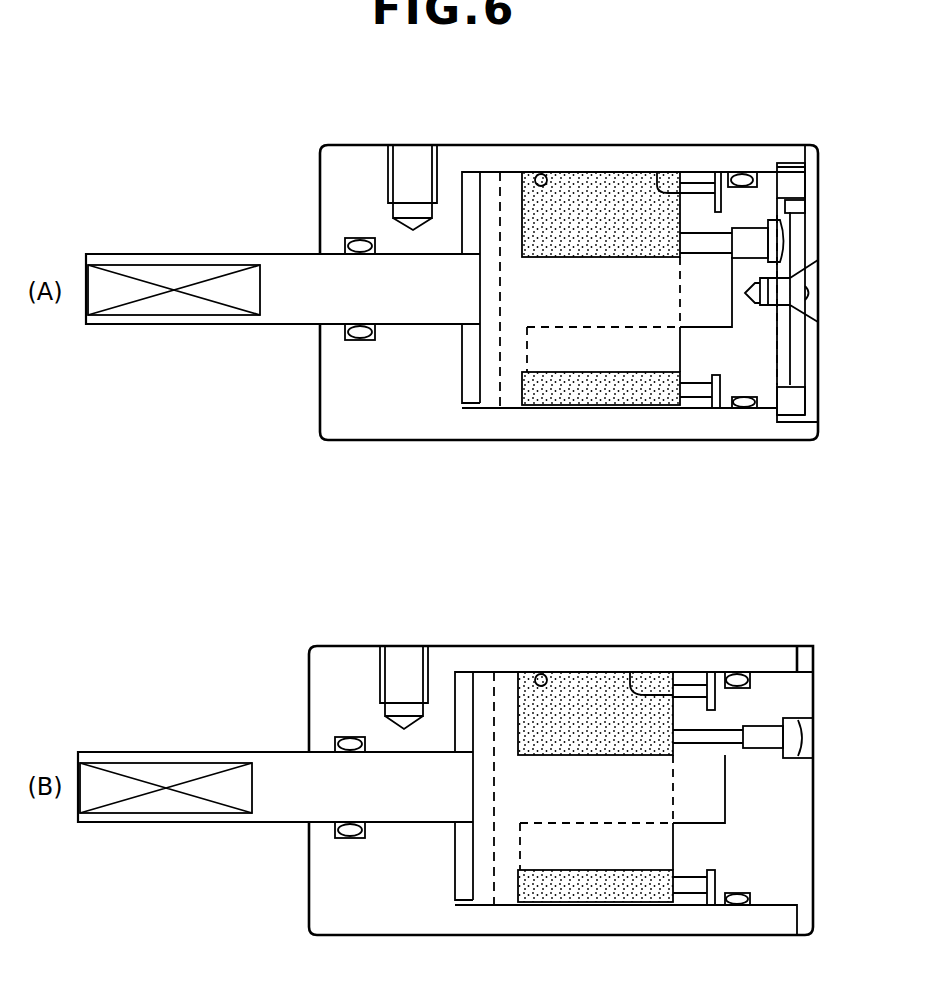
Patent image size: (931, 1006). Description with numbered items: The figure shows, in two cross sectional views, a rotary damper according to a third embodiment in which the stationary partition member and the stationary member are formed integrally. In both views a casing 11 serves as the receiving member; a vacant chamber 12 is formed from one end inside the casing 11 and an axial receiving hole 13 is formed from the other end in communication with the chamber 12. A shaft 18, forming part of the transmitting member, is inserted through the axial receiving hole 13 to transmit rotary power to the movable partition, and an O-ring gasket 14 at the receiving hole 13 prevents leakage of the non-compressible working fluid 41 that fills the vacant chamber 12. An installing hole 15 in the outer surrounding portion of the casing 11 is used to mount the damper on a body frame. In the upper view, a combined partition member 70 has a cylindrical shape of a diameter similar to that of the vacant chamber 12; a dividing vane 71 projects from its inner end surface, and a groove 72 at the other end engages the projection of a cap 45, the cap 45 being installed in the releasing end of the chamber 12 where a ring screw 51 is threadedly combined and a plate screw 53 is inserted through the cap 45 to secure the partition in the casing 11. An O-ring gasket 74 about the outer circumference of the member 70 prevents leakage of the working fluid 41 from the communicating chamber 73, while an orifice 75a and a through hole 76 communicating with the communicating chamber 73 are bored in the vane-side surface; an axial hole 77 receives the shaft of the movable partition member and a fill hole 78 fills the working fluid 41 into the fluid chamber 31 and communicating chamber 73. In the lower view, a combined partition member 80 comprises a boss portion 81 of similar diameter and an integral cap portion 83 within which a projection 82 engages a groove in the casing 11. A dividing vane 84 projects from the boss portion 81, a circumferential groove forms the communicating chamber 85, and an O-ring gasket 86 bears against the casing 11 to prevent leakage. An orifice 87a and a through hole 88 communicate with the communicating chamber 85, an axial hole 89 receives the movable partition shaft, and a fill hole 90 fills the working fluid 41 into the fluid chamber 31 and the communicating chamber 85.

The casing 11 is at (606, 158).
The vacant chamber 12 is at (546, 175).
The axial receiving hole 13 is at (406, 320).
The O-ring gasket 14 is at (352, 342).
The installing hole 15 is at (413, 160).
The shaft 18 is at (276, 256).
The fluid chamber 31 is at (576, 196).
The working fluid 41 is at (559, 230).
The cap 45 is at (820, 165).
The ring screw 51 is at (790, 175).
The plate screw 53 is at (808, 300).
The combined partition member 70 is at (731, 210).
The dividing vane 71 is at (618, 358).
The groove 72 is at (792, 208).
The communicating chamber 73 is at (716, 408).
The O-ring gasket 74 is at (744, 406).
The orifice 75a is at (658, 172).
The through hole 76 is at (680, 392).
The axial hole 77 is at (690, 298).
The fill hole 78 is at (682, 245).
The combined partition member 80 is at (772, 696).
The boss portion 81 is at (713, 690).
The projection 82 is at (813, 648).
The cap portion 83 is at (815, 672).
The dividing vane 84 is at (598, 858).
The communicating chamber 85 is at (710, 905).
The O-ring gasket 86 is at (738, 905).
The orifice 87a is at (629, 672).
The through hole 88 is at (673, 886).
The axial hole 89 is at (685, 793).
The fill hole 90 is at (672, 742).